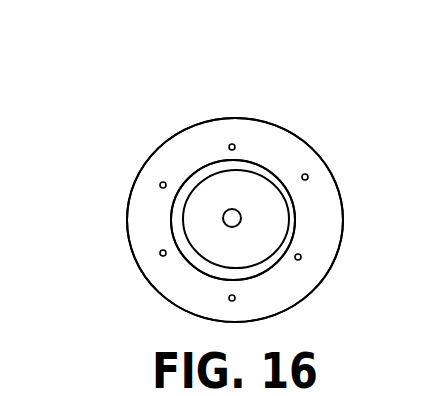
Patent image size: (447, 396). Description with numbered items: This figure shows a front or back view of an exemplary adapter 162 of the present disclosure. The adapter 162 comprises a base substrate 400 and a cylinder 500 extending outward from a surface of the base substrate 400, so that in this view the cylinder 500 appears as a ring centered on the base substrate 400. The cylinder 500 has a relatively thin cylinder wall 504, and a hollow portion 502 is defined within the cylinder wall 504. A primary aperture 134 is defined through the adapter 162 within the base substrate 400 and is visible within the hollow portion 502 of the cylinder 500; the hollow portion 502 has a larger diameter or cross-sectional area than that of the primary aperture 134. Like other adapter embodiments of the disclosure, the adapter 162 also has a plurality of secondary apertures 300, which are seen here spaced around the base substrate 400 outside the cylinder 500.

The adapter 162 is at (212, 88).
The secondary apertures 300 is at (232, 147).
The base substrate 400 is at (272, 145).
The hollow portion 502 is at (250, 198).
The cylinder 500 is at (298, 212).
The cylinder wall 504 is at (177, 213).
The primary aperture 134 is at (233, 225).